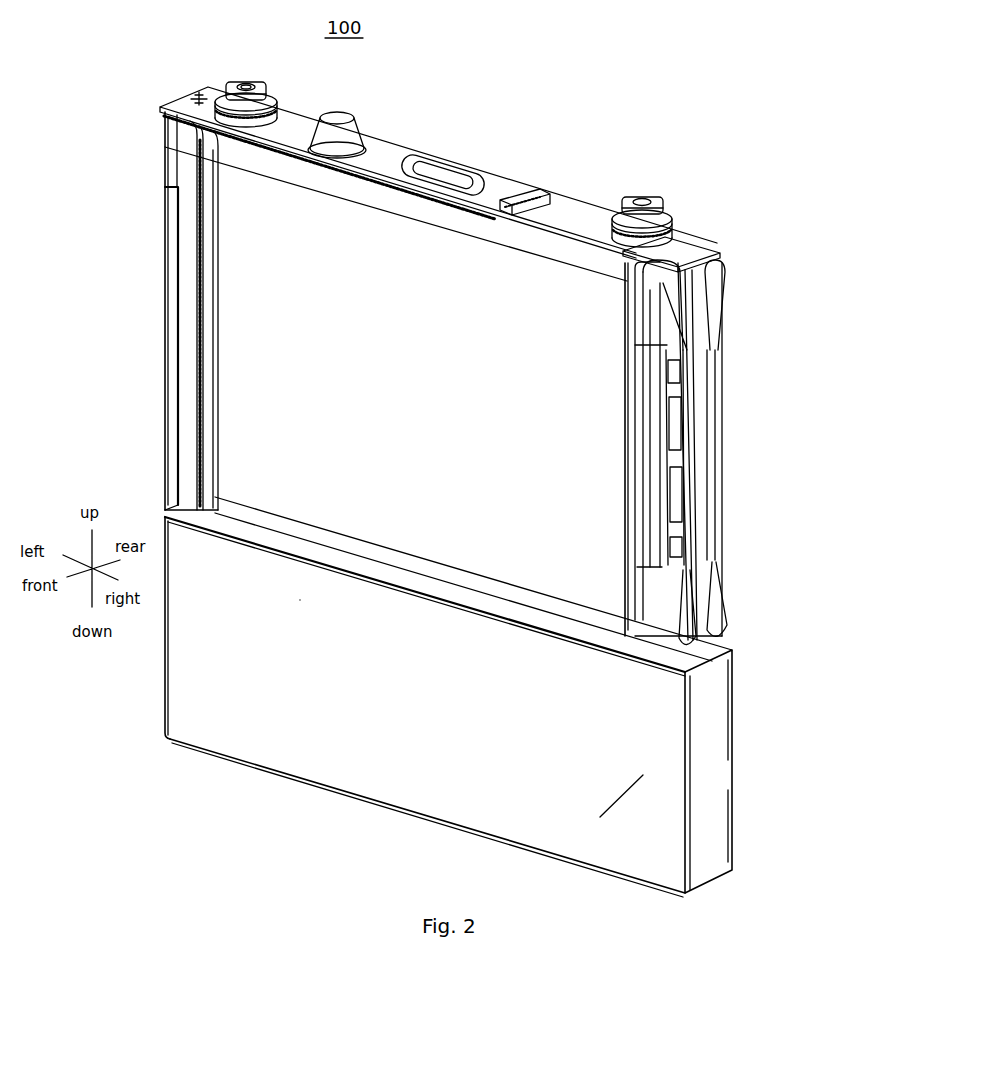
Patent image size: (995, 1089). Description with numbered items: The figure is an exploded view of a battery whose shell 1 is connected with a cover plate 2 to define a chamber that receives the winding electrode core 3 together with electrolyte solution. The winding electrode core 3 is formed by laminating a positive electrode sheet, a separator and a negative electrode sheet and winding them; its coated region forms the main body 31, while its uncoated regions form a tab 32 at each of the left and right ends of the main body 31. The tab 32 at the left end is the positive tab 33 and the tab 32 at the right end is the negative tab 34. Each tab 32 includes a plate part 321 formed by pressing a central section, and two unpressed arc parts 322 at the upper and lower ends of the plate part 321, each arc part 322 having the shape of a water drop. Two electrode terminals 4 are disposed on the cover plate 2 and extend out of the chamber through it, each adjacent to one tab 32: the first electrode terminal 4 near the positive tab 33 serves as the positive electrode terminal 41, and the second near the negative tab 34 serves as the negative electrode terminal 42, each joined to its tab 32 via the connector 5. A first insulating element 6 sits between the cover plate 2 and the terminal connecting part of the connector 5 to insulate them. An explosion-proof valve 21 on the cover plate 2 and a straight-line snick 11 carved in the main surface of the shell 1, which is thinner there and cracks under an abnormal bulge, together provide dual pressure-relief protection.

The shell 1 is at (190, 677).
The snick 11 is at (612, 797).
The cover plate 2 is at (377, 150).
The explosion-proof valve 21 is at (447, 173).
The first insulating element 6 is at (522, 207).
The electrode terminal 4 is at (460, 142).
The positive electrode terminal 41 is at (240, 80).
The negative electrode terminal 42 is at (640, 203).
The connector 5 is at (680, 253).
The winding electrode core 3 is at (145, 225).
The main body 31 is at (247, 273).
The tab 32 is at (467, 416).
The positive tab 33 is at (177, 336).
The negative tab 34 is at (764, 452).
The plate part 321 is at (683, 456).
The arc part 322 is at (708, 428).